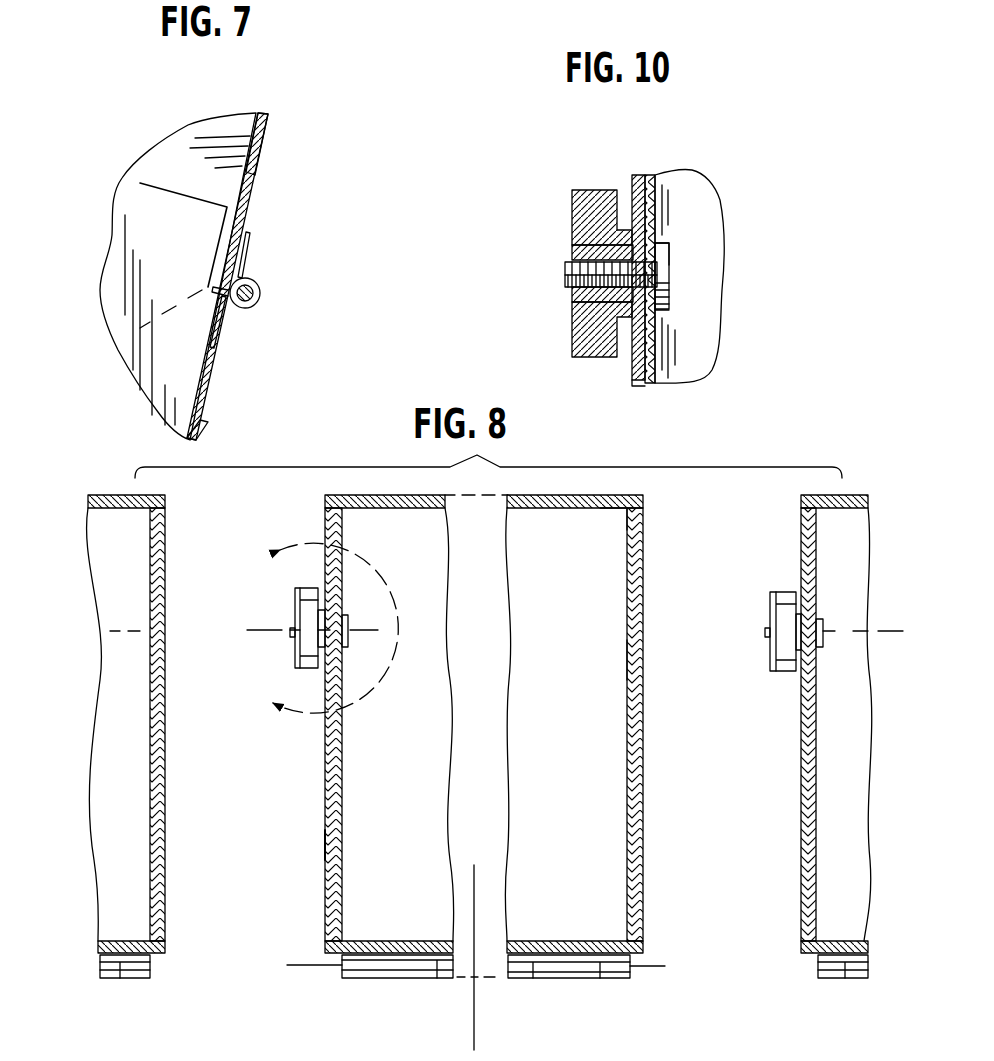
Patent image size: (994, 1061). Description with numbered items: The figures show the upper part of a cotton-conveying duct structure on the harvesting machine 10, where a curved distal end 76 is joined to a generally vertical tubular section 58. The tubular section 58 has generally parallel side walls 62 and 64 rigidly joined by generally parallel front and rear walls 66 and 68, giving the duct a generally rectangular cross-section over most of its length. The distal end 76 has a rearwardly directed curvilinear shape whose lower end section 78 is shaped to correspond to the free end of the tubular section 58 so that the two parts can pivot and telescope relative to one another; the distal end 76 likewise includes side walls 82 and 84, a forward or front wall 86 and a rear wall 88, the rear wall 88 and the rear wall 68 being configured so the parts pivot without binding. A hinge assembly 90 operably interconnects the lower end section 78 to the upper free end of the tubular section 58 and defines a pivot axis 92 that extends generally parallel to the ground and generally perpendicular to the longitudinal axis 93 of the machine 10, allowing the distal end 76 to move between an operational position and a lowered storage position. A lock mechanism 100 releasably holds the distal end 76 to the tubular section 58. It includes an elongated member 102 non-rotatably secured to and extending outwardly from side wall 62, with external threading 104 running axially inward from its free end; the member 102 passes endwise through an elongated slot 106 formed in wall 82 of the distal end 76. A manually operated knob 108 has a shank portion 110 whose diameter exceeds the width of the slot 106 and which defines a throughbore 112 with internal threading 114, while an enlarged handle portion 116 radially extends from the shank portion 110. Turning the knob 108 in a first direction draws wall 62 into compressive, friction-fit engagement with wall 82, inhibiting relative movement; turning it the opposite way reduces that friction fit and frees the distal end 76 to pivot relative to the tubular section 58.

In FIG. 8, the machine 10 is at (322, 628).
In FIG. 7, the vertical tubular section 58 is at (206, 428).
In FIG. 10, the vertical tubular section 58 is at (665, 352).
In FIG. 8, the vertical tubular section 58 is at (611, 710).
In FIG. 10, the side wall 62 is at (650, 195).
In FIG. 8, the side wall 62 is at (336, 797).
In FIG. 7, the side wall 64 is at (160, 165).
In FIG. 8, the side wall 64 is at (630, 655).
In FIG. 8, the front wall 66 is at (600, 510).
In FIG. 7, the rear wall 68 is at (212, 368).
In FIG. 8, the rear wall 68 is at (360, 948).
In FIG. 7, the distal end 76 is at (262, 202).
In FIG. 10, the distal end 76 is at (633, 176).
In FIG. 8, the distal end 76 is at (648, 543).
In FIG. 7, the lower end section 78 is at (266, 124).
In FIG. 10, the side wall 82 is at (636, 372).
In FIG. 8, the side wall 82 is at (326, 848).
In FIG. 8, the side wall 84 is at (643, 885).
In FIG. 8, the front wall 86 is at (598, 500).
In FIG. 7, the rear wall 88 is at (258, 166).
In FIG. 7, the hinge assembly 90 is at (263, 293).
In FIG. 8, the hinge assembly 90 is at (385, 985).
In FIG. 8, the pivot axis 92 is at (655, 966).
In FIG. 8, the longitudinal axis 93 is at (474, 866).
In FIG. 10, the lock mechanism 100 is at (637, 265).
In FIG. 8, the lock mechanism 100 is at (258, 632).
In FIG. 10, the elongated member 102 is at (670, 262).
In FIG. 10, the external threading 104 is at (582, 300).
In FIG. 10, the elongated slot 106 is at (665, 243).
In FIG. 10, the knob 108 is at (568, 350).
In FIG. 10, the shank portion 110 is at (662, 348).
In FIG. 10, the throughbore 112 is at (568, 255).
In FIG. 10, the internal threading 114 is at (568, 293).
In FIG. 10, the handle portion 116 is at (572, 205).